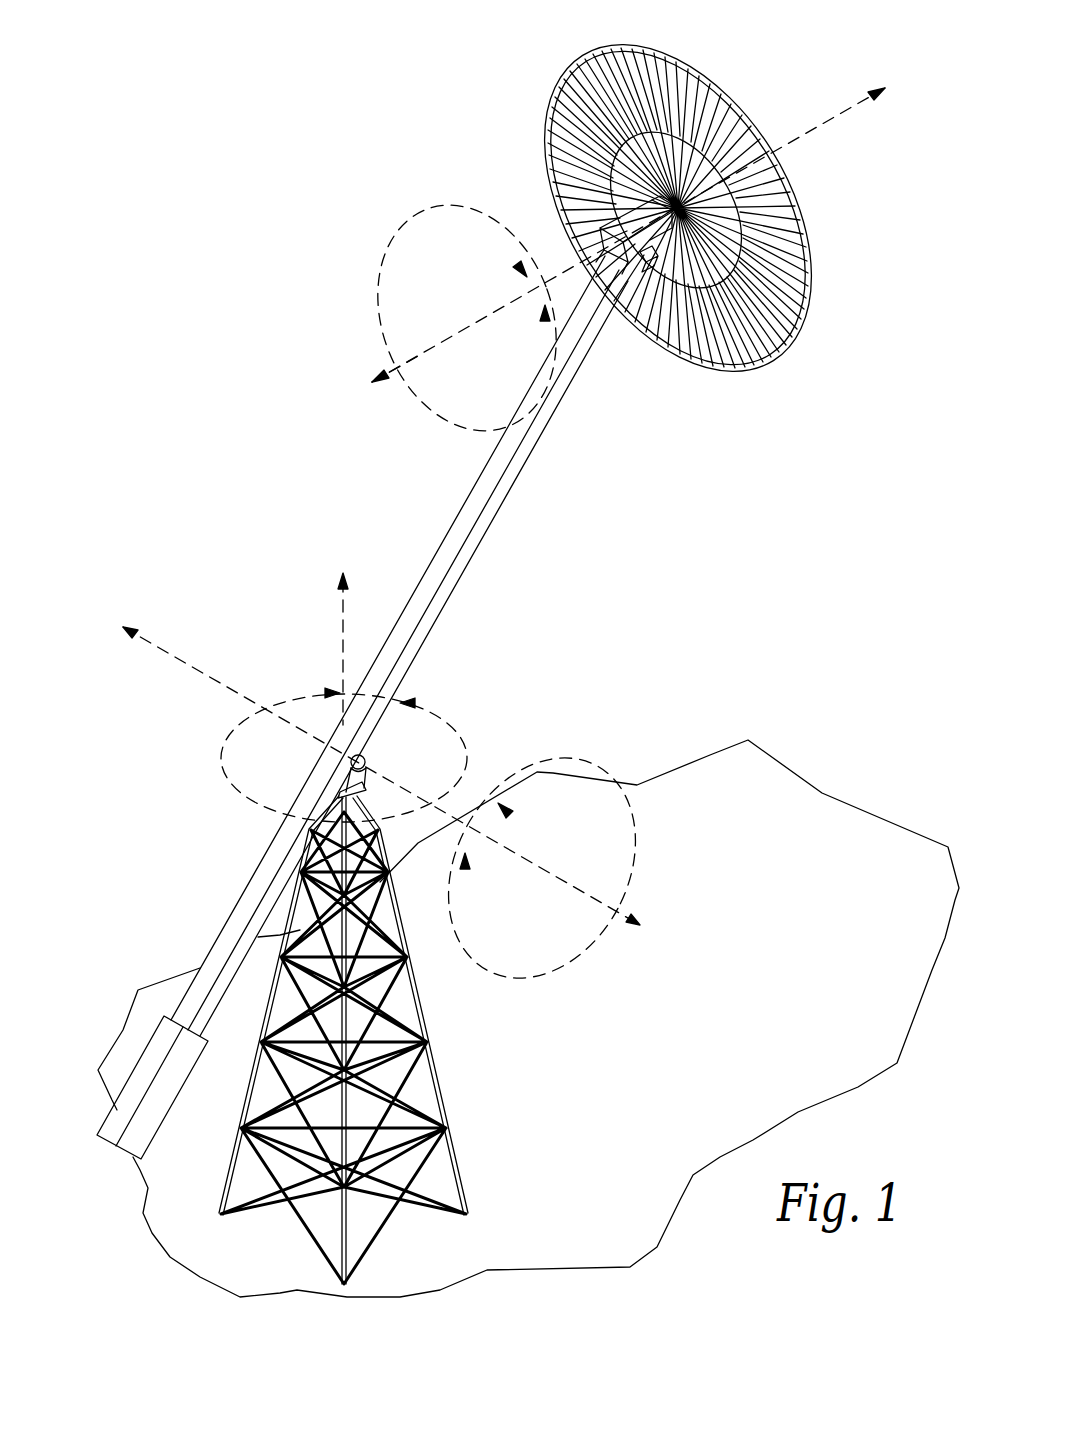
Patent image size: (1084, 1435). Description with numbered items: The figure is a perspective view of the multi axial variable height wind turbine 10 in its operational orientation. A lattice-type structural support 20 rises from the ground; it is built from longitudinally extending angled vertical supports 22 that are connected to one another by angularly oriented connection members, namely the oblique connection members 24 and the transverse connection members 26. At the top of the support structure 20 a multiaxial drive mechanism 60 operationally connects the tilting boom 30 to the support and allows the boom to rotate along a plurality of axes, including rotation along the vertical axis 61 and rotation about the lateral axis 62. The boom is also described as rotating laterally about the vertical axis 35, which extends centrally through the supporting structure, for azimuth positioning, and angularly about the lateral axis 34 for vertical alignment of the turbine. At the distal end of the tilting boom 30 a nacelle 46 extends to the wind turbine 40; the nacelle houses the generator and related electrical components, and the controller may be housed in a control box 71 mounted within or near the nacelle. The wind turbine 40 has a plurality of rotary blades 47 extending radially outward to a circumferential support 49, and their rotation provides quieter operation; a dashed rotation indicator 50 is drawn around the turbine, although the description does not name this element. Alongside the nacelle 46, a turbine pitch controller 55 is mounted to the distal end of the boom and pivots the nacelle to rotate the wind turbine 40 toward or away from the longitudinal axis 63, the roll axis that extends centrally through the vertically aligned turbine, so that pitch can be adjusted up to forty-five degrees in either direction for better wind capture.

The multi axial variable height wind turbine 10 is at (130, 382).
The structural support 20 is at (503, 1049).
The angled vertical supports 22 is at (345, 1237).
The oblique connection members 24 is at (423, 1210).
The transverse connection members 26 is at (423, 1147).
The tilting boom 30 is at (103, 1016).
The lateral axis 34 is at (580, 757).
The vertical axis 35 is at (222, 767).
The wind turbine 40 is at (548, 50).
The nacelle 46 is at (620, 255).
The rotary blades 47 is at (765, 203).
The circumferential support 49 is at (785, 176).
The rotor rotation 50 is at (398, 193).
The turbine pitch controller 55 is at (650, 257).
The multiaxial drive mechanism 60 is at (398, 768).
The vertical axis 61 is at (343, 632).
The lateral axis 62 is at (612, 900).
The longitudinal axis 63 is at (382, 374).
The control box 71 is at (632, 226).